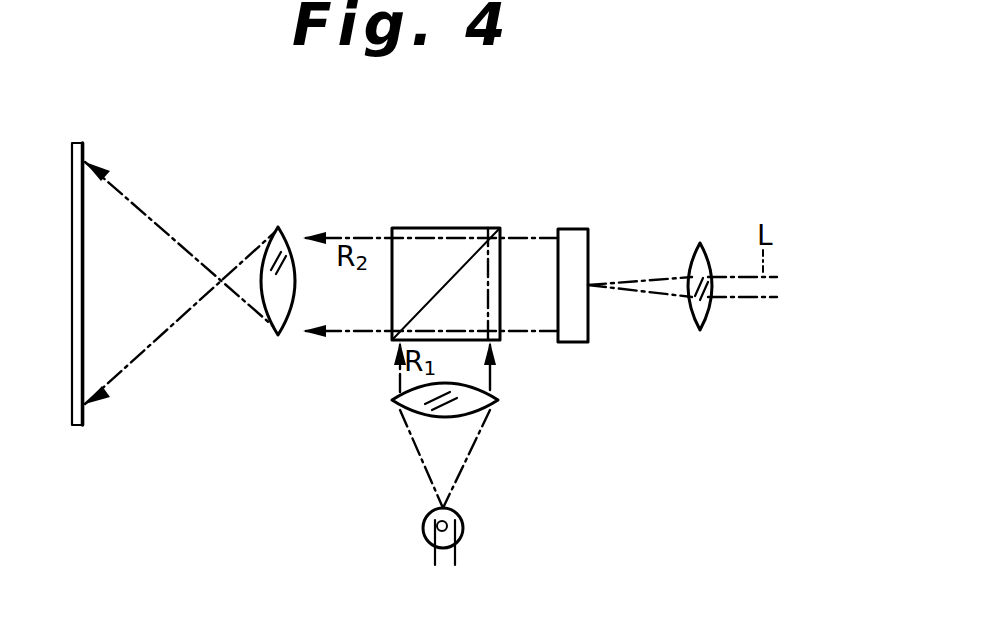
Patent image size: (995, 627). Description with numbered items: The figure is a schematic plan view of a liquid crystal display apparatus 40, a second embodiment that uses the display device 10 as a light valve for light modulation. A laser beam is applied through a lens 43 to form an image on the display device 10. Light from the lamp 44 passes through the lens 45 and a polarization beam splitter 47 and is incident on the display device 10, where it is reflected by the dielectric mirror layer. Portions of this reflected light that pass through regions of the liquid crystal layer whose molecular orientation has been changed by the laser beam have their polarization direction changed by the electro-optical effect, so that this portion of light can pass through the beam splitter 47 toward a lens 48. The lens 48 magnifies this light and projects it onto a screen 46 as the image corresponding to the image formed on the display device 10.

The liquid crystal display apparatus 40 is at (397, 185).
The screen 46 is at (85, 150).
The lens 48 is at (278, 230).
The polarization beam splitter 47 is at (453, 228).
The display device 10 is at (582, 243).
The lens 43 is at (700, 246).
The lens 45 is at (480, 392).
The lamp 44 is at (465, 527).